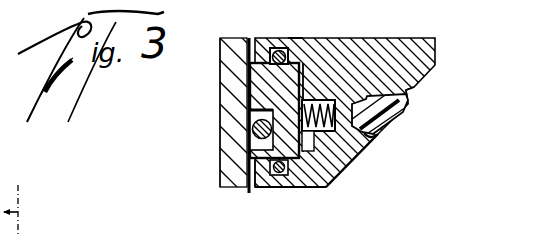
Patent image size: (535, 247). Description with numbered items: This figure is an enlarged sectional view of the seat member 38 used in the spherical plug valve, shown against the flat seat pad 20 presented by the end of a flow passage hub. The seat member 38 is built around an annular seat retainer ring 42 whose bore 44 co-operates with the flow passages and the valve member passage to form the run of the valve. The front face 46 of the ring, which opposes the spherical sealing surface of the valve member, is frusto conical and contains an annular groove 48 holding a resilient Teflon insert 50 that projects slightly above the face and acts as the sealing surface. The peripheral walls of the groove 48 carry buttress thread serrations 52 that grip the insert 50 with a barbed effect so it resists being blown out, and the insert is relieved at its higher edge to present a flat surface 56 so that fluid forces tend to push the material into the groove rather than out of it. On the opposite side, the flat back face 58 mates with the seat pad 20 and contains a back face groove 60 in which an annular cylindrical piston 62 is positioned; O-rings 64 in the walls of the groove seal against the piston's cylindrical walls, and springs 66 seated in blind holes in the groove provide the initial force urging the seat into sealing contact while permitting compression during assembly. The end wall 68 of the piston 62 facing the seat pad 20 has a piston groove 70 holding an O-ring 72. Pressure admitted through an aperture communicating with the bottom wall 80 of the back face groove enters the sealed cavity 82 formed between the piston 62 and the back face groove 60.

The seat pad 20 is at (260, 177).
The seat member 38 is at (252, 190).
The seat retainer ring 42 is at (329, 43).
The bore 44 is at (303, 187).
The front face 46 is at (360, 151).
The annular groove 48 is at (373, 137).
The insert 50 is at (392, 118).
The buttress thread serrations 52 is at (391, 97).
The flat surface 56 is at (405, 108).
The back face 58 is at (253, 172).
The back face groove 60 is at (300, 75).
The piston 62 is at (252, 79).
The O-rings 64 is at (274, 48).
The springs 66 is at (331, 99).
The end wall 68 is at (246, 88).
The piston groove 70 is at (244, 107).
The O-ring 72 is at (256, 133).
The bottom wall 80 is at (251, 114).
The sealed cavity 82 is at (308, 40).